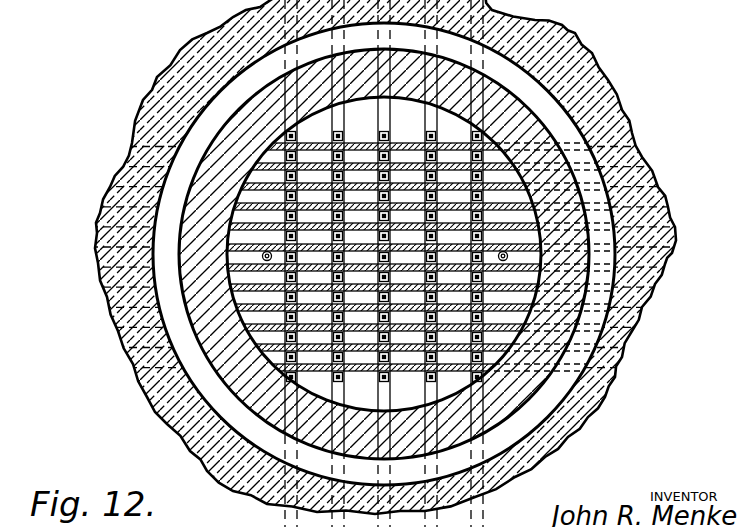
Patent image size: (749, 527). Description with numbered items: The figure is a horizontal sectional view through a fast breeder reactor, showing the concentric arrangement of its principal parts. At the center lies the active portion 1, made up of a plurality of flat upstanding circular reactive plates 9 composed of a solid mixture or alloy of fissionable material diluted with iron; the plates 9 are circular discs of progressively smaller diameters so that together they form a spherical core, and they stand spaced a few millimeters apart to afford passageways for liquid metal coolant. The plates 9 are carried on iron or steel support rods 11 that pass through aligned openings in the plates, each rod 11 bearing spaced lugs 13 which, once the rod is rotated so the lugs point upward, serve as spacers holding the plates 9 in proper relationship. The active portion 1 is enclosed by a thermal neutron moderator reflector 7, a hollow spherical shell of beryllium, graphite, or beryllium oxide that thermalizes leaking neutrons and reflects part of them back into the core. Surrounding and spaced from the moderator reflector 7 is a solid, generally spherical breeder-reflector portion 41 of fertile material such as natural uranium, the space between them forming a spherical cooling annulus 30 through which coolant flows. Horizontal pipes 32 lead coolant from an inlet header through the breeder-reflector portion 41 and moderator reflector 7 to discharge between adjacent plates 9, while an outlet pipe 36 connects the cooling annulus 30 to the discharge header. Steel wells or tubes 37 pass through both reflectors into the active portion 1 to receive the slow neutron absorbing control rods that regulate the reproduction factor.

The active portion 1 is at (407, 104).
The moderator reflector 7 is at (325, 93).
The reactive plates 9 is at (364, 142).
The support rods 11 is at (468, 48).
The lugs 13 is at (392, 356).
The cooling annulus 30 is at (248, 428).
The horizontal pipes 32 is at (656, 236).
The outlet pipe 36 is at (108, 318).
The wells or tubes 37 is at (262, 253).
The breeder-reflector portion 41 is at (569, 76).